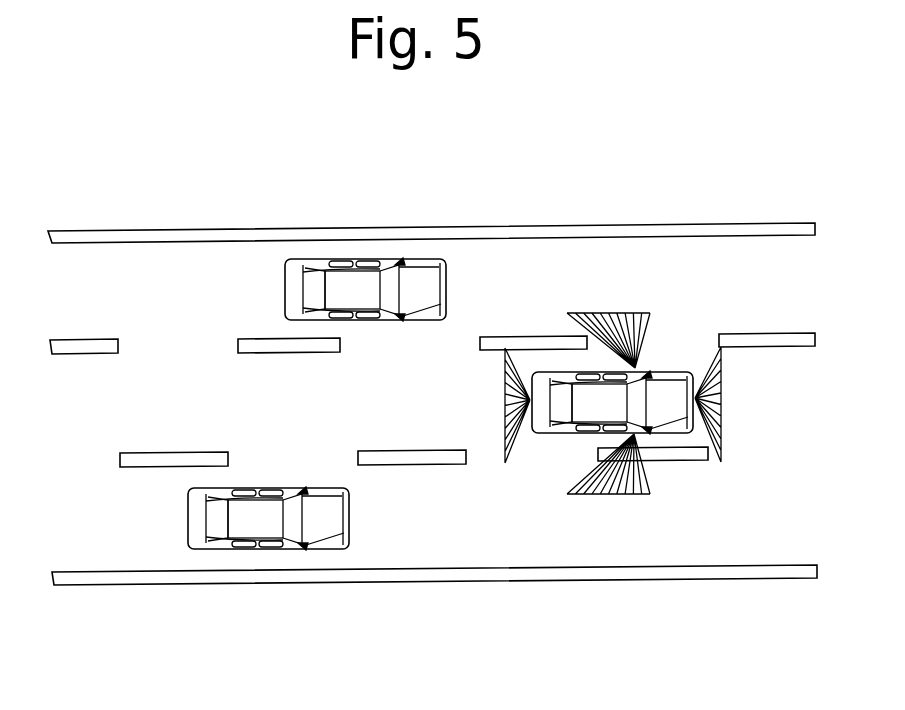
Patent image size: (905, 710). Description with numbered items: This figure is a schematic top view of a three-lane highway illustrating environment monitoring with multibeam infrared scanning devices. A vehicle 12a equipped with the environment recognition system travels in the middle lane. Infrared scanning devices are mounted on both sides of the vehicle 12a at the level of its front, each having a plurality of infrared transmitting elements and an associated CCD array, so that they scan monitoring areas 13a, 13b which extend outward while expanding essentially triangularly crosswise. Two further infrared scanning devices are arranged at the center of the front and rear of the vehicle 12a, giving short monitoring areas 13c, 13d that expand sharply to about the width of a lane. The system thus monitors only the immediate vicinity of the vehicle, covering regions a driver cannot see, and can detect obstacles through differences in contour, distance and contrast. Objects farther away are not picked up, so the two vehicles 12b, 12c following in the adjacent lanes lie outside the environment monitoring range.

The vehicle 12a is at (667, 400).
The vehicle 12b is at (342, 287).
The vehicle 12c is at (258, 513).
The monitoring area 13a is at (605, 320).
The monitoring area 13b is at (628, 483).
The monitoring area 13c is at (714, 404).
The monitoring area 13d is at (510, 403).